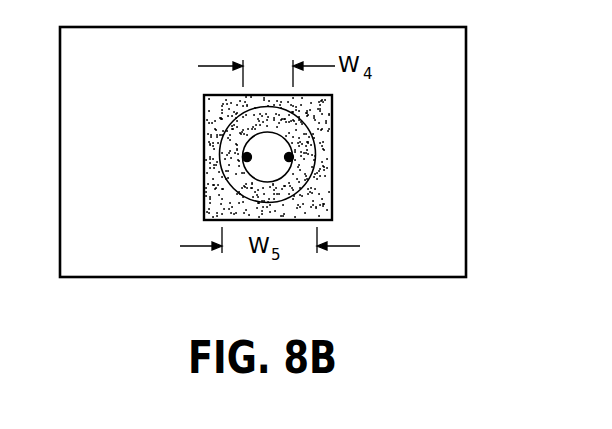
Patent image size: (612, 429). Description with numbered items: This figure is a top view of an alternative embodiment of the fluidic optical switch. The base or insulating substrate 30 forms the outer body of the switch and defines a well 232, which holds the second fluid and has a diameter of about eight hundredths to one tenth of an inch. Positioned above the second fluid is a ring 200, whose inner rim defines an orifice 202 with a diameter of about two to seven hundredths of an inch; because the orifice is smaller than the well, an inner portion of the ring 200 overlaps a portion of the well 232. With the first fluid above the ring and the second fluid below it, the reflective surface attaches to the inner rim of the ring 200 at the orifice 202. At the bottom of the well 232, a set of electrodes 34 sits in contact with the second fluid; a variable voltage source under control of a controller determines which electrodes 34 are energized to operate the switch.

The insulating substrate 30 is at (466, 82).
The ring 200 is at (233, 172).
The well 232 is at (279, 171).
The orifice 202 is at (253, 137).
The electrodes 34 is at (247, 157).